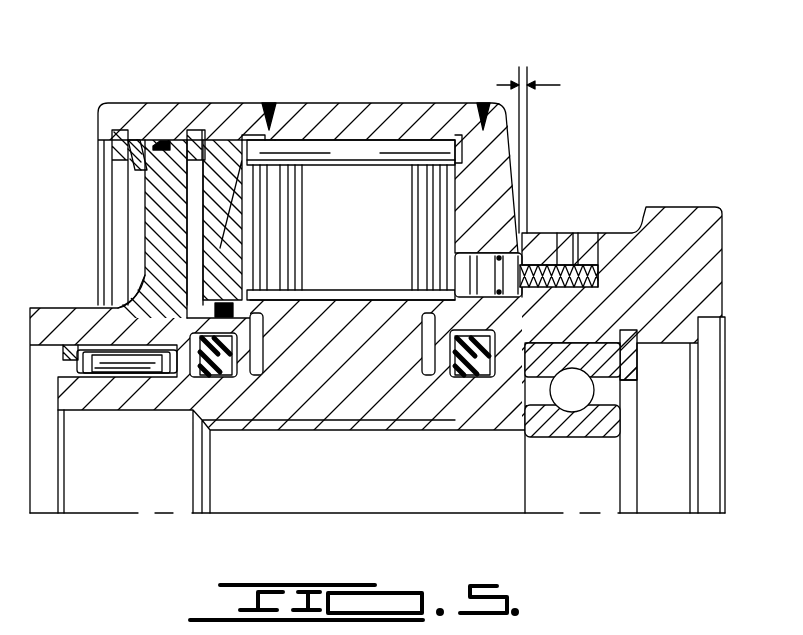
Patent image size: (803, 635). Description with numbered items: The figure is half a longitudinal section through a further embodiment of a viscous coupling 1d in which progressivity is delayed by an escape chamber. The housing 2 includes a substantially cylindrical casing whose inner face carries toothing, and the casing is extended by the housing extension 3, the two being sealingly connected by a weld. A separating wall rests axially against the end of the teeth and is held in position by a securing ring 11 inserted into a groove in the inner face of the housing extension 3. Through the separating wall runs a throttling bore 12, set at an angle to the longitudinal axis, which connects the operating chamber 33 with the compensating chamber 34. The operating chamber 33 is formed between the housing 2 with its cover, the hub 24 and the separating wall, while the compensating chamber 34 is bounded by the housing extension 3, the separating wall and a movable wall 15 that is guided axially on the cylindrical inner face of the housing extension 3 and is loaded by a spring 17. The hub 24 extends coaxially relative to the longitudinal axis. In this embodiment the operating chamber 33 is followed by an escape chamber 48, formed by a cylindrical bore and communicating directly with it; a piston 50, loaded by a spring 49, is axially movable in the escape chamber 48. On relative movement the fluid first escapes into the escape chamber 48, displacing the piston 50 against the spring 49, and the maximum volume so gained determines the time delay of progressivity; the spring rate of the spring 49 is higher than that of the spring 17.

The clutch release bearing unit 1d is at (641, 118).
The housing 2 is at (432, 122).
The housing extension 3 is at (110, 118).
The securing ring 11 is at (195, 140).
The throttling bore 12 is at (220, 245).
The movable wall 15 is at (157, 277).
The spring 17 is at (140, 170).
The hub 24 is at (415, 398).
The operating chamber 33 is at (365, 177).
The compensating chamber 34 is at (193, 226).
The escape chamber 48 is at (590, 258).
The spring 49 is at (557, 262).
The piston 50 is at (510, 262).